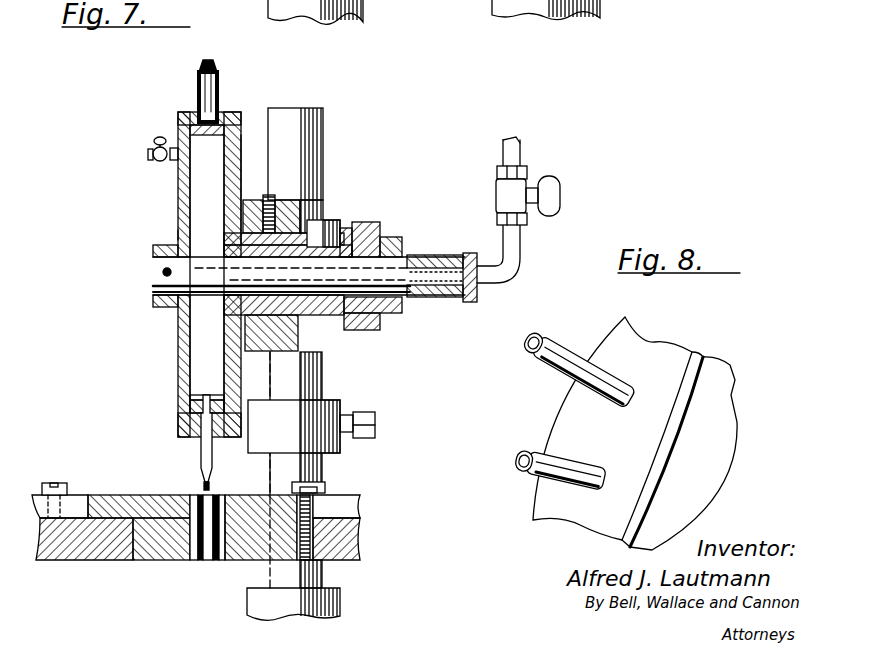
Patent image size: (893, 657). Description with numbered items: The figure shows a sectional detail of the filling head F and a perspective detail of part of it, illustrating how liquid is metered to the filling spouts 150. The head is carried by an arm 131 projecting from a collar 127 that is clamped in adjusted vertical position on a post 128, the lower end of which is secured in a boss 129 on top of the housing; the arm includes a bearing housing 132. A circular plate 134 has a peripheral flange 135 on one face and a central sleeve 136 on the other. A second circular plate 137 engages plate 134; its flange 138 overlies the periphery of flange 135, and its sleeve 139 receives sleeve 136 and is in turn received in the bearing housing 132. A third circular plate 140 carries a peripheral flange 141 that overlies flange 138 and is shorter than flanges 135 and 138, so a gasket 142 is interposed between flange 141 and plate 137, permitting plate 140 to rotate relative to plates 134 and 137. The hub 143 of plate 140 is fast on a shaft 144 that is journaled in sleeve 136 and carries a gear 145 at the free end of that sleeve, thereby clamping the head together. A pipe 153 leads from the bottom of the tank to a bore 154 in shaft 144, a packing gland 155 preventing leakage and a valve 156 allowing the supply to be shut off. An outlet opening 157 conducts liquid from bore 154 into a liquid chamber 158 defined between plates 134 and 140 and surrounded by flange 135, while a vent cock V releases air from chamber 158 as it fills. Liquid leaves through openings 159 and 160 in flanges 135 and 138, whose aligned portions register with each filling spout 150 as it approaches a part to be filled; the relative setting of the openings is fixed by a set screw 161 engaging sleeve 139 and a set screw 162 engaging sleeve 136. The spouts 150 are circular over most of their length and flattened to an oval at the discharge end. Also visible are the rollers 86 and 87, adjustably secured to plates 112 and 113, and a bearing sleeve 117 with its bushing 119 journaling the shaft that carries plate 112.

In FIG. 7, the roller 86 is at (245, 560).
In FIG. 7, the roller 87 is at (160, 555).
In FIG. 7, the plate 112 is at (360, 540).
In FIG. 7, the plate 113 is at (90, 560).
In FIG. 7, the bearing sleeve 117 is at (600, 10).
In FIG. 7, the bushing 119 is at (370, 12).
In FIG. 7, the collar 127 is at (352, 225).
In FIG. 7, the post 128 is at (323, 125).
In FIG. 7, the boss 129 is at (340, 600).
In FIG. 7, the arm 131 is at (318, 352).
In FIG. 7, the bearing housing 132 is at (310, 200).
In FIG. 7, the circular plate 134 is at (222, 190).
In FIG. 7, the peripheral flange 135 is at (190, 140).
In FIG. 7, the sleeve 136 is at (300, 335).
In FIG. 7, the circular plate 137 is at (243, 165).
In FIG. 8, the circular plate 137 is at (725, 398).
In FIG. 7, the flange 138 is at (190, 112).
In FIG. 7, the sleeve 139 is at (320, 210).
In FIG. 7, the circular plate 140 is at (180, 352).
In FIG. 7, the peripheral flange 141 is at (218, 112).
In FIG. 8, the peripheral flange 141 is at (650, 338).
In FIG. 7, the gasket 142 is at (241, 130).
In FIG. 8, the gasket 142 is at (695, 370).
In FIG. 7, the hub 143 is at (155, 297).
In FIG. 7, the shaft 144 is at (163, 268).
In FIG. 7, the gear 145 is at (385, 237).
In FIG. 7, the filling spout 150 is at (200, 462).
In FIG. 8, the filling spout 150 is at (556, 337).
In FIG. 7, the pipe 153 is at (521, 152).
In FIG. 7, the bore 154 is at (410, 270).
In FIG. 7, the packing gland 155 is at (478, 298).
In FIG. 7, the valve 156 is at (528, 172).
In FIG. 7, the outlet opening 157 is at (183, 318).
In FIG. 7, the liquid chamber 158 is at (205, 400).
In FIG. 7, the opening 159 is at (200, 416).
In FIG. 7, the opening 160 is at (200, 432).
In FIG. 7, the set screw 161 is at (275, 200).
In FIG. 7, the set screw 162 is at (325, 232).
In FIG. 7, the vent cock V is at (148, 156).
In FIG. 7, the filling head F is at (172, 218).
In FIG. 8, the filling head F is at (548, 410).